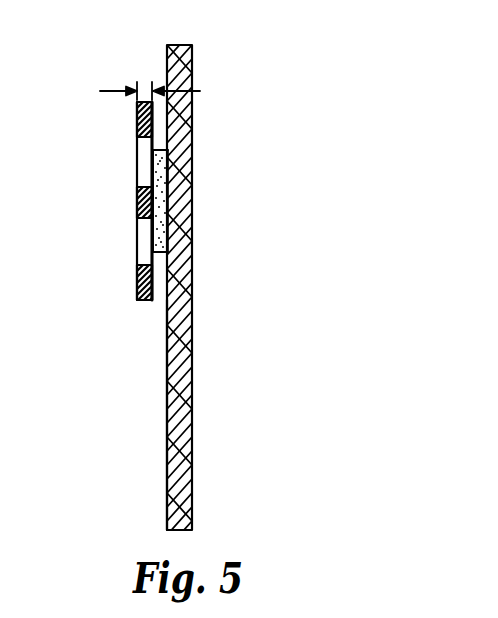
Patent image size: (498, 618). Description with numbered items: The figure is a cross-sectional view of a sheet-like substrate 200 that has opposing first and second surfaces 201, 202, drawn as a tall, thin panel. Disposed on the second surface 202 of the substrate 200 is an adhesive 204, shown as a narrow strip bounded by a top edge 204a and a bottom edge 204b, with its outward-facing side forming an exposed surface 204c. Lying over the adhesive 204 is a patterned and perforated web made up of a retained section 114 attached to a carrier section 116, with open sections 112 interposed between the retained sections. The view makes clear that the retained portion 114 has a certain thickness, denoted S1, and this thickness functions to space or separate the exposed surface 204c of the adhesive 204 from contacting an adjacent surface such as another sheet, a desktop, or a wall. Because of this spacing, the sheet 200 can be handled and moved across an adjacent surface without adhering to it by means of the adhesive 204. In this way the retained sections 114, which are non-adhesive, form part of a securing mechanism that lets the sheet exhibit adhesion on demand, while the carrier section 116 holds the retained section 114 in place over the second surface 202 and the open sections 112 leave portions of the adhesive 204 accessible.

The substrate 200 is at (193, 290).
The first surface 201 is at (192, 497).
The second surface 202 is at (167, 460).
The adhesive 204 is at (164, 237).
The top edge 204a is at (160, 150).
The bottom edge 204b is at (160, 254).
The exposed surface 204c is at (150, 239).
The open sections 112 is at (138, 165).
The retained section 114 is at (138, 212).
The carrier section 116 is at (137, 124).
The thickness S1 is at (150, 67).